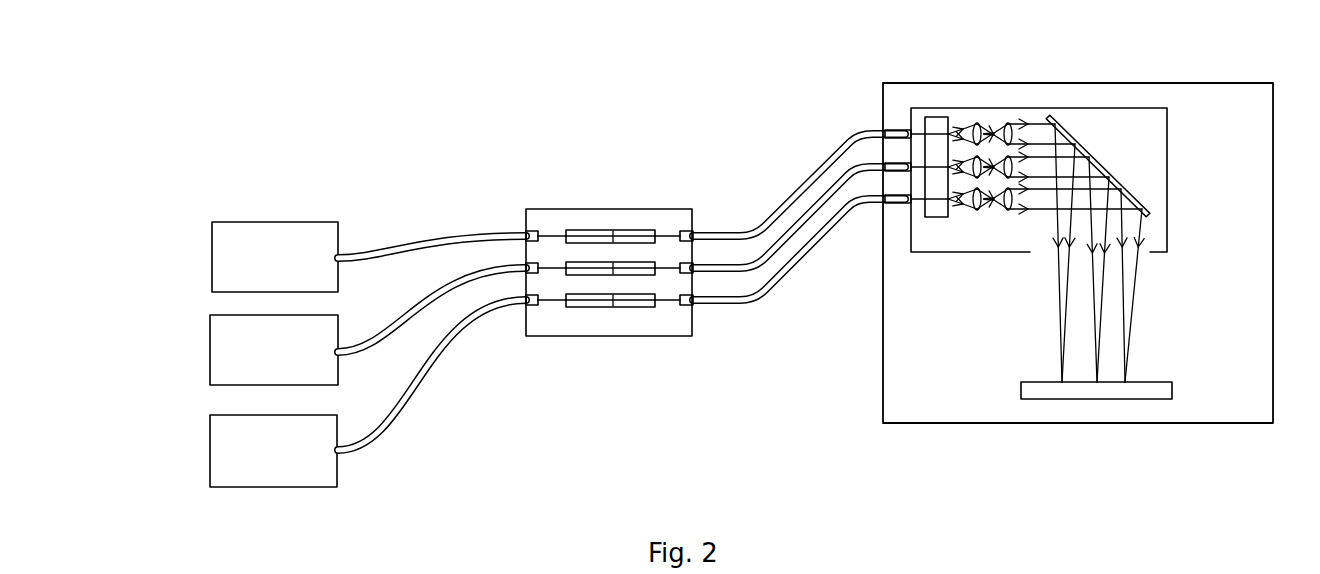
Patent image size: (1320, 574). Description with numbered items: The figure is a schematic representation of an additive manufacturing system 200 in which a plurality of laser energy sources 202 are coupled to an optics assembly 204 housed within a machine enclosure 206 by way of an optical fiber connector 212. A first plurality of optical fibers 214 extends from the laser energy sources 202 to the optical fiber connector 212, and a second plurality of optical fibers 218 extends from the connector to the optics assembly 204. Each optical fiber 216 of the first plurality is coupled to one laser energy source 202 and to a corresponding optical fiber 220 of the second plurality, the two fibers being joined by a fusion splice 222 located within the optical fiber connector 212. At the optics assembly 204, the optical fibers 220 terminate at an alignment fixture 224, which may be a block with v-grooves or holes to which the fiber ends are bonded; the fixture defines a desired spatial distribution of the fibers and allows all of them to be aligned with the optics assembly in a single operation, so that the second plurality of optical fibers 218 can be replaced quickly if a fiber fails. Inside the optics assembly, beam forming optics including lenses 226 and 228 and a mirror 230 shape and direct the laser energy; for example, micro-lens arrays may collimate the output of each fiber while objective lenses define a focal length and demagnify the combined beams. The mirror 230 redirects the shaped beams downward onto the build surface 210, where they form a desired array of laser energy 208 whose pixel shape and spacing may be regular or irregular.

The additive manufacturing system 200 is at (640, 128).
The laser energy source 202 is at (301, 271).
The optics assembly 204 is at (1057, 221).
The machine enclosure 206 is at (1227, 83).
The array of laser energy 208 is at (1140, 317).
The build surface 210 is at (1157, 382).
The optical fiber connector 212 is at (615, 268).
The first plurality of optical fibers 214 is at (442, 324).
The optical fiber 216 is at (455, 232).
The second plurality of optical fibers 218 is at (799, 253).
The optical fiber 220 is at (810, 173).
The fusion splice 222 is at (630, 230).
The alignment fixture 224 is at (933, 217).
The lens 226 is at (980, 212).
The lens 228 is at (1011, 212).
The mirror 230 is at (1097, 156).